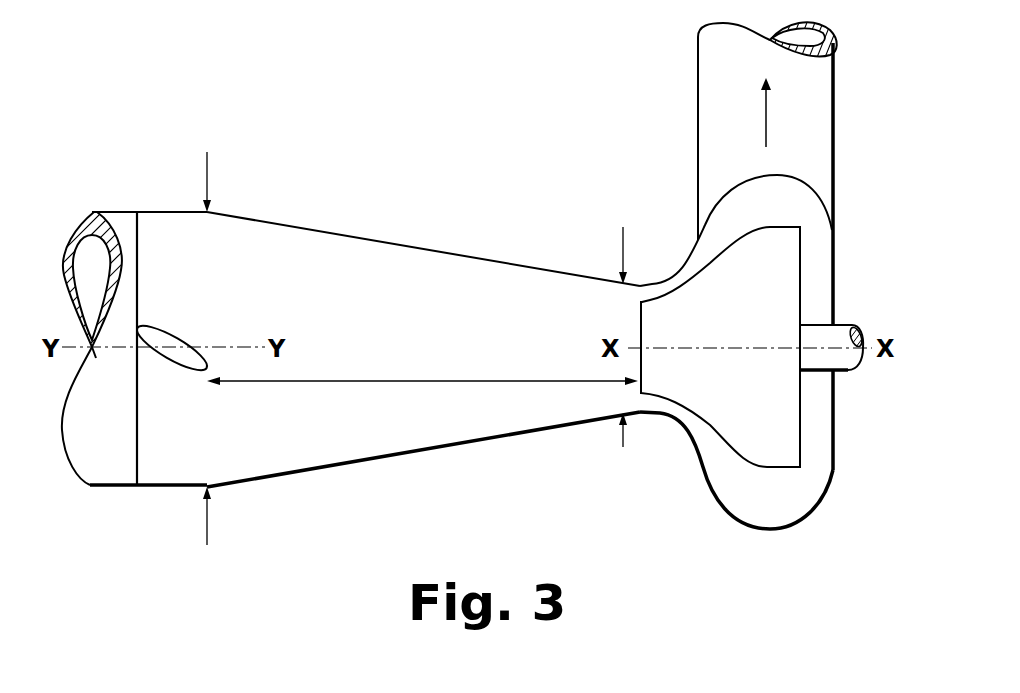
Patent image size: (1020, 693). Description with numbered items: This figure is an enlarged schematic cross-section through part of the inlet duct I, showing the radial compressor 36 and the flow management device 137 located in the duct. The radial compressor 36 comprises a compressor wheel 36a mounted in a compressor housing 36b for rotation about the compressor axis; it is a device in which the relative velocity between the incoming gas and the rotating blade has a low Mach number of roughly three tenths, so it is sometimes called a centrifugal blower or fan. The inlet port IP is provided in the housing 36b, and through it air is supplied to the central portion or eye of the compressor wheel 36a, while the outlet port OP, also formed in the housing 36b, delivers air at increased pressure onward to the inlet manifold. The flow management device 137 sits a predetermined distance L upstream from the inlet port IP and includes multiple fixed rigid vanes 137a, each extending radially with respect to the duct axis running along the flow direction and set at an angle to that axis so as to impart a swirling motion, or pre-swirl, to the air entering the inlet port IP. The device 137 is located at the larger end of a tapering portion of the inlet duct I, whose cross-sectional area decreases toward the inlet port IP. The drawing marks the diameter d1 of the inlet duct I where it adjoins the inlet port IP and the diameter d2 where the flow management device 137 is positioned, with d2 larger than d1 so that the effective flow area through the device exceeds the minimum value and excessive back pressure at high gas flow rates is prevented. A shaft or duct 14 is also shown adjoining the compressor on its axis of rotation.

The flow management device 137 is at (208, 280).
The fixed rigid vanes 137a is at (177, 337).
The radial compressor 36 is at (715, 350).
The compressor wheel 36a is at (731, 231).
The compressor housing 36b is at (702, 485).
The tube 14 is at (842, 318).
The diameter of the inlet duct at the inlet port d1 is at (618, 257).
The diameter of the inlet duct at the flow management device d2 is at (208, 182).
The predetermined distance L is at (428, 381).
The outlet port OP is at (745, 177).
The inlet port IP is at (640, 414).
The inlet duct I is at (268, 478).